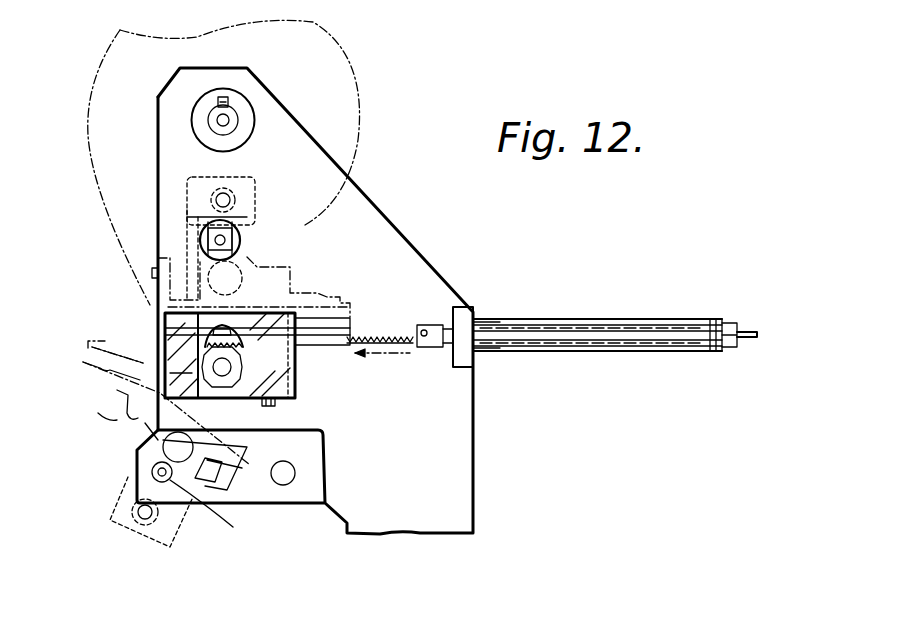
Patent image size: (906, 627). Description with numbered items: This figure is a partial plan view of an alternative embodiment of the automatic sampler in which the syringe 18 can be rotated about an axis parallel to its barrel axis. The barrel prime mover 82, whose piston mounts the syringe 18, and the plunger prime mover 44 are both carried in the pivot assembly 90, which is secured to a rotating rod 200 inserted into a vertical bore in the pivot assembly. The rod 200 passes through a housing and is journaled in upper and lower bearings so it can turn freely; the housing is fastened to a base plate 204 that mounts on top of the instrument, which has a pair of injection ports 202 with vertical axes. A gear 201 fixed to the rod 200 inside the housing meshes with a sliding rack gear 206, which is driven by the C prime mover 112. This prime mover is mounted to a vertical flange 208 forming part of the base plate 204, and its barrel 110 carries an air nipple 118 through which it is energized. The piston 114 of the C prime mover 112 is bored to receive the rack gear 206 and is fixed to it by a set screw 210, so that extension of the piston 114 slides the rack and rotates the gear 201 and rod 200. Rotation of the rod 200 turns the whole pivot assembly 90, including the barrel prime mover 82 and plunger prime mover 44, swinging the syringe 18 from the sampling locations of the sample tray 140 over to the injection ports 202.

The syringe 18 is at (237, 238).
The plunger prime mover 44 is at (230, 193).
The barrel prime mover 82 is at (245, 113).
The pivot assembly 90 is at (272, 270).
The barrel 110 is at (670, 318).
The C prime mover 112 is at (555, 323).
The piston 114 is at (437, 322).
The air nipple 118 is at (748, 332).
The sample tray 140 is at (353, 137).
The rotating rod 200 is at (222, 368).
The gear 201 is at (240, 345).
The injection ports 202 is at (277, 483).
The base plate 204 is at (447, 488).
The sliding rack gear 206 is at (390, 337).
The vertical flange 208 is at (465, 325).
The set screw 210 is at (422, 345).